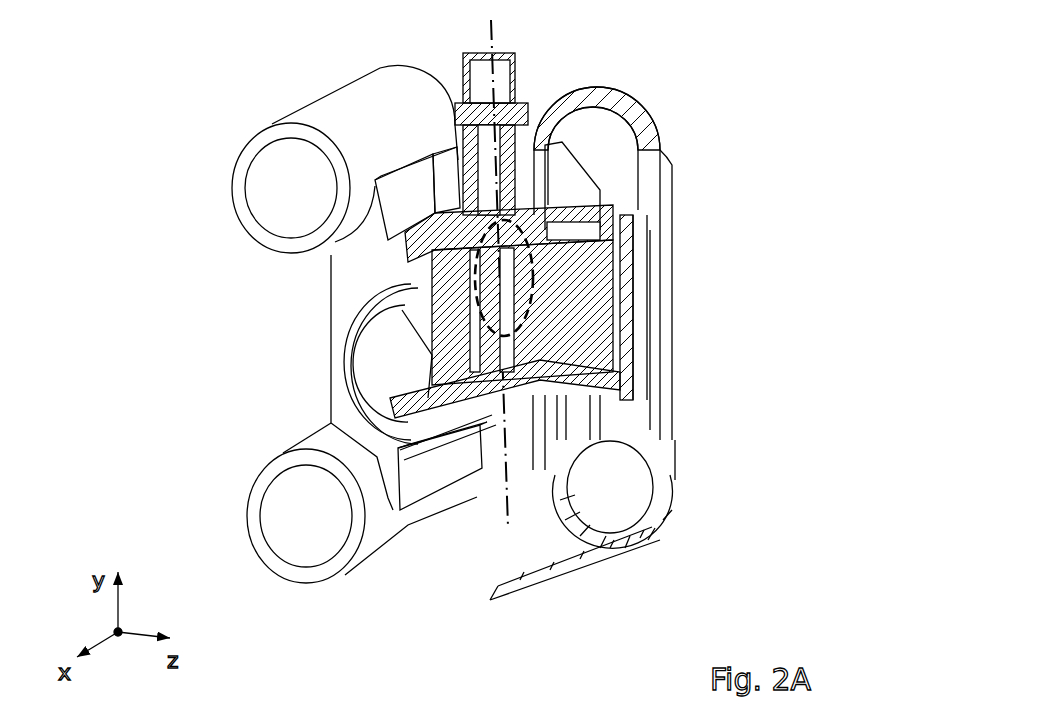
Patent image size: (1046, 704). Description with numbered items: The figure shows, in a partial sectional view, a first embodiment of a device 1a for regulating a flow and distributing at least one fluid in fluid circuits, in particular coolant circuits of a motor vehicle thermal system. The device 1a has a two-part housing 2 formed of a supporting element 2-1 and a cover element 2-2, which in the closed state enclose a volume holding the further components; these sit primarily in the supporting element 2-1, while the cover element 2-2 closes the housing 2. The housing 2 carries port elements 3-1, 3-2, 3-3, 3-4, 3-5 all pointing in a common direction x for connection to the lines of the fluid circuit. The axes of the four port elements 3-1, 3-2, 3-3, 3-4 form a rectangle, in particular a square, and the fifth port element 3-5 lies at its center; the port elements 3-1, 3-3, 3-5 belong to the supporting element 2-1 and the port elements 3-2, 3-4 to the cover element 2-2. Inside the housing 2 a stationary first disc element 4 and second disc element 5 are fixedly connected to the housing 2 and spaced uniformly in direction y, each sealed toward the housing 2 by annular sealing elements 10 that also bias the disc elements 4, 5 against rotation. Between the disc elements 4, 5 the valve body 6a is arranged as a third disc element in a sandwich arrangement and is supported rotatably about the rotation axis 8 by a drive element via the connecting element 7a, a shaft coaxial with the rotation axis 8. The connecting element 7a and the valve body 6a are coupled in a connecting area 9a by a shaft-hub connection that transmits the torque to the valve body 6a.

The device for regulating a flow and distributing at least one fluid 1a is at (744, 58).
The housing 2 is at (302, 98).
The supporting element 2-1 is at (345, 277).
The cover element 2-2 is at (407, 520).
The port element 3-1 is at (262, 192).
The port element 3-2 is at (298, 520).
The port element 3-3 is at (622, 168).
The port element 3-4 is at (622, 502).
The fifth port element 3-5 is at (371, 358).
The first disc element 4 is at (440, 257).
The second disc element 5 is at (480, 400).
The valve body 6a is at (585, 290).
The connecting element 7a is at (505, 80).
The rotation axis 8 is at (490, 37).
The connecting area 9a is at (532, 303).
The sealing elements 10 is at (604, 224).